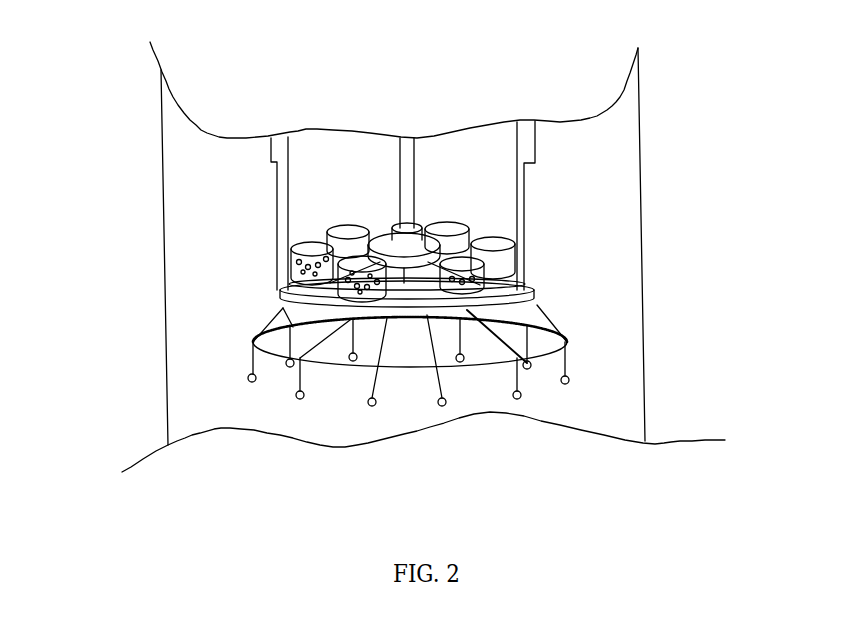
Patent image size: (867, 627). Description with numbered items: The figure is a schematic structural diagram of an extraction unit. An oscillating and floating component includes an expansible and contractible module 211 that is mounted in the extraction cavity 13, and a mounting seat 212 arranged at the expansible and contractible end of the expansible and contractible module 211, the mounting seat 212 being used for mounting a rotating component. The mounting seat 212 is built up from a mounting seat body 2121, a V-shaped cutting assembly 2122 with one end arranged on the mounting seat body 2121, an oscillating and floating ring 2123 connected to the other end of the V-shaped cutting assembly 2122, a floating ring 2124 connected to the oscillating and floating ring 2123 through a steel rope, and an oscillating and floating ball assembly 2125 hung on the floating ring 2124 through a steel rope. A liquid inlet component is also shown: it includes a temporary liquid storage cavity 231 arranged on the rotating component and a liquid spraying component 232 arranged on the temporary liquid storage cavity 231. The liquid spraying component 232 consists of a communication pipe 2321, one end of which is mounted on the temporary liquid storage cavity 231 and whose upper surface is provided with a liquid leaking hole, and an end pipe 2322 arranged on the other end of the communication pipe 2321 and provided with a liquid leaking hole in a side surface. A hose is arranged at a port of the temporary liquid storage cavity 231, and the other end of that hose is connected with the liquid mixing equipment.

The extraction cavity 13 is at (168, 355).
The expansible and contractible module 211 is at (276, 266).
The mounting seat 212 is at (412, 248).
The mounting seat body 2121 is at (398, 292).
The V-shaped cutting assembly 2122 is at (480, 290).
The oscillating and floating ring 2123 is at (485, 320).
The floating ring 2124 is at (568, 344).
The oscillating and floating ball assembly 2125 is at (568, 378).
The temporary liquid storage cavity 231 is at (380, 228).
The liquid spraying component 232 is at (277, 228).
The communication pipe 2321 is at (463, 237).
The end pipe 2322 is at (387, 298).